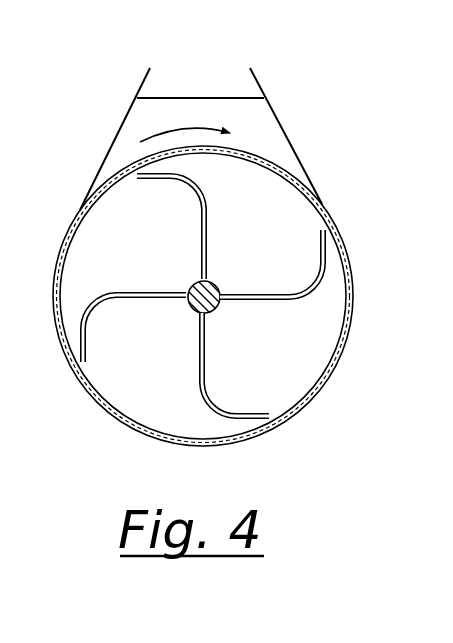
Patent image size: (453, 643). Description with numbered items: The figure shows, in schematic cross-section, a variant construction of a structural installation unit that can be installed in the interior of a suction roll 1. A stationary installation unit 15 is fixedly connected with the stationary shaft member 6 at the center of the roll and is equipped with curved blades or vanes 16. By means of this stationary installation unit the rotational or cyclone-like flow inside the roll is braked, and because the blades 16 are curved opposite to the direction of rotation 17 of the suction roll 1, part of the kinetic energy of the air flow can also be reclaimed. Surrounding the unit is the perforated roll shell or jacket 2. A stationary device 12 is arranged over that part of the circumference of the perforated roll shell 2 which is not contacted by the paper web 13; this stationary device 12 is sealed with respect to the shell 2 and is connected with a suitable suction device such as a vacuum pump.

The suction roll 1 is at (84, 400).
The perforated roll shell 2 is at (325, 385).
The stationary shaft member 6 is at (192, 286).
The stationary device 12 is at (257, 128).
The paper web 13 is at (140, 82).
The stationary installation unit 15 is at (282, 303).
The curved blades 16 is at (326, 256).
The direction of rotation 17 is at (187, 128).